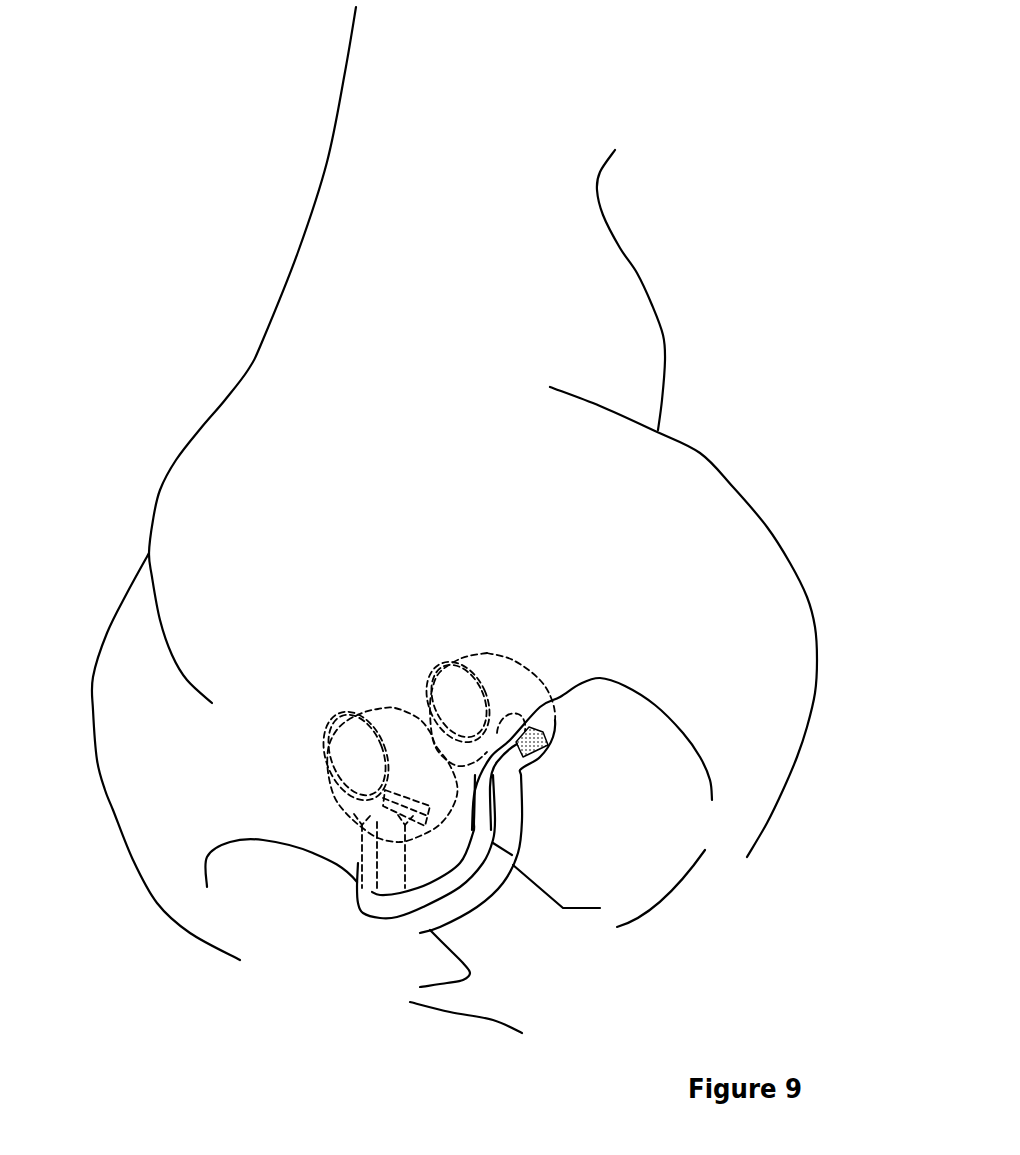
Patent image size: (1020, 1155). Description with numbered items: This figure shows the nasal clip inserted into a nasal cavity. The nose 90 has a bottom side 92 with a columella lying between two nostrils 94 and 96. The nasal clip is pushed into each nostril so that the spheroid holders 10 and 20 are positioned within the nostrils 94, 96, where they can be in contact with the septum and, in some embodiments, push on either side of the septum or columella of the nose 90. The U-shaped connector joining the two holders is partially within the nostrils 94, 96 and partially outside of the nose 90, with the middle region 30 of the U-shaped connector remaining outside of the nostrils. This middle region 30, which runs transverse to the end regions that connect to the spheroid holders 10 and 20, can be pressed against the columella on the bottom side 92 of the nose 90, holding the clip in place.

The nose 90 is at (255, 448).
The spheroid holder 10 is at (387, 722).
The spheroid holder 20 is at (495, 655).
The middle region 30 is at (418, 920).
The bottom side 92 is at (502, 918).
The nostril 94 is at (432, 967).
The nostril 96 is at (631, 865).